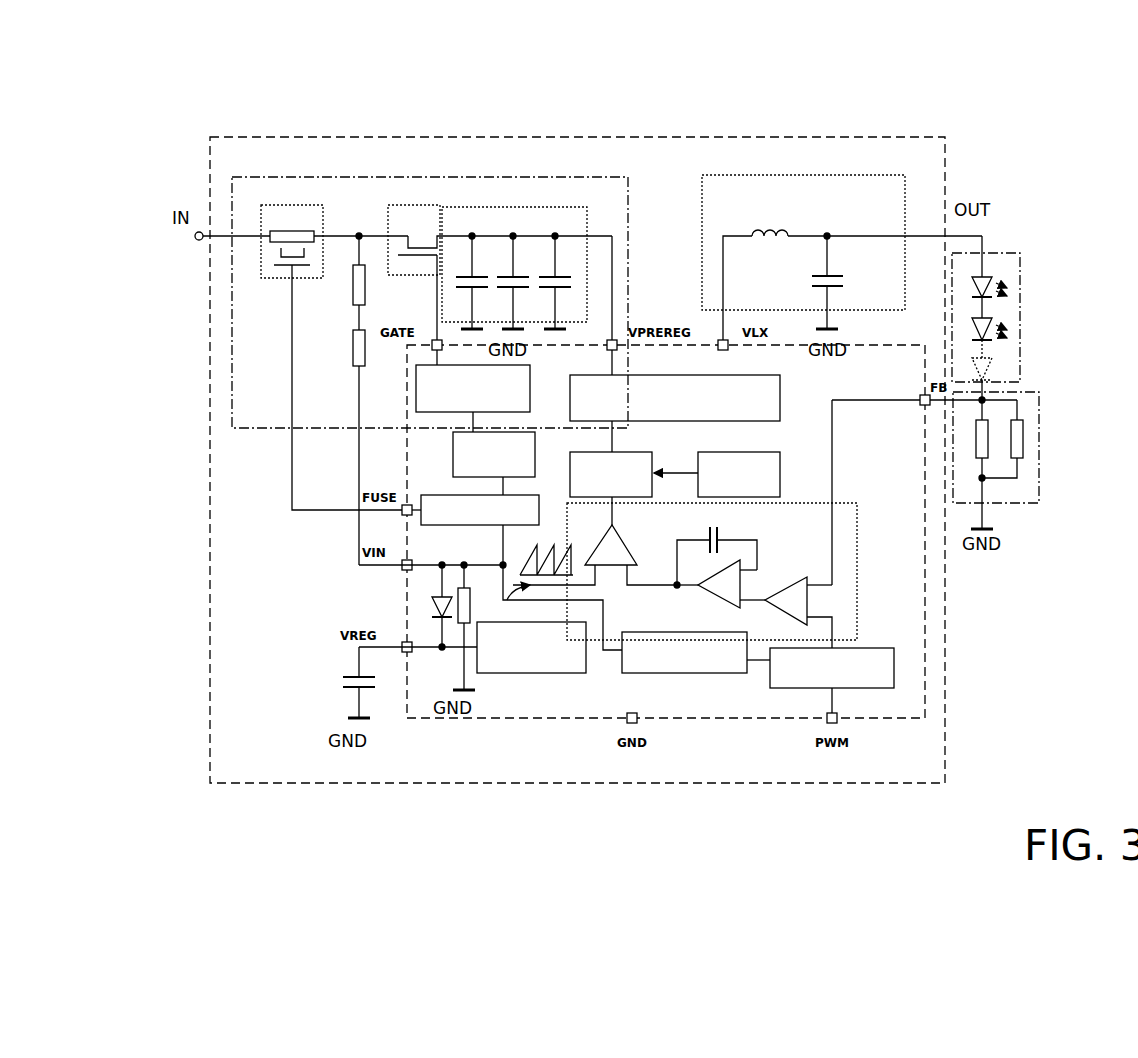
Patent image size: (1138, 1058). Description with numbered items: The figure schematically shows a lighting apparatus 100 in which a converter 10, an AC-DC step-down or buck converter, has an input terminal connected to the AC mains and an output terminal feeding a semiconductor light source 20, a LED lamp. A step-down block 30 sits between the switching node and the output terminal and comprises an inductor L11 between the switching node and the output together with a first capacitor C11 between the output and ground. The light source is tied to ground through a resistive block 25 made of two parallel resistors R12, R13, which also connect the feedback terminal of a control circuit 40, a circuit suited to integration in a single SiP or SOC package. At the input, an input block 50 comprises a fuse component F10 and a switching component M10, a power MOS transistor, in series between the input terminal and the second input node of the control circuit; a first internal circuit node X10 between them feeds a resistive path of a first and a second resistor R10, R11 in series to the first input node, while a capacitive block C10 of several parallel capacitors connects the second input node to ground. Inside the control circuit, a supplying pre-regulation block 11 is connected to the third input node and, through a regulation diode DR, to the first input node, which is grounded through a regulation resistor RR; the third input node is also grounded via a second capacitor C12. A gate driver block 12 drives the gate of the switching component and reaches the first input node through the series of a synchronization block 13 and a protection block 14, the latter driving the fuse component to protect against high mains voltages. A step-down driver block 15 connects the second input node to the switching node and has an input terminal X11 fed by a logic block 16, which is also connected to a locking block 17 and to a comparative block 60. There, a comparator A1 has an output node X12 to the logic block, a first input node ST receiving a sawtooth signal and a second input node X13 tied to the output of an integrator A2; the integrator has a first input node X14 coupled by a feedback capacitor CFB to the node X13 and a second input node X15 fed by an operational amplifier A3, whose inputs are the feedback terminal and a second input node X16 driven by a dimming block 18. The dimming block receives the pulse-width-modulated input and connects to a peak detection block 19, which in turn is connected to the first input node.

The lighting apparatus 100 is at (617, 411).
The converter 10 is at (238, 707).
The semiconductor light source 20 is at (1008, 272).
The resistive block 25 is at (1020, 495).
The step-down block 30 is at (748, 195).
The control circuit 40 is at (912, 590).
The input block 50 is at (285, 408).
The comparative block 60 is at (838, 545).
The supplying pre-regulation block 11 is at (530, 668).
The gate driver block 12 is at (520, 378).
The synchronization block 13 is at (455, 435).
The protection block 14 is at (470, 525).
The step-down driver block 15 is at (760, 408).
The logic block 16 is at (590, 465).
The locking block 17 is at (770, 475).
The dimming block 18 is at (866, 678).
The peak detection block 19 is at (655, 668).
The first internal circuit node X10 is at (359, 230).
The input terminal of the step-down driver block X11 is at (615, 420).
The output node of the comparator X12 is at (610, 497).
The second input node of the comparator X13 is at (650, 590).
The first input node of the integrator X14 is at (808, 521).
The second input node of the integrator X15 is at (740, 603).
The second input node of the operational amplifier X16 is at (840, 613).
The comparator A1 is at (595, 555).
The integrator A2 is at (719, 588).
The operational amplifier A3 is at (798, 603).
The capacitive block C10 is at (537, 207).
The first capacitor C11 is at (845, 281).
The second capacitor C12 is at (338, 682).
The feedback capacitor CFB is at (717, 551).
The regulation diode DR is at (419, 606).
The regulation resistor RR is at (476, 627).
The first input node of the comparator ST is at (526, 581).
The fuse component F10 is at (292, 241).
The switching component M10 is at (430, 272).
The first resistor R10 is at (341, 283).
The second resistor R11 is at (341, 447).
The resistor R12 is at (960, 464).
The resistor R13 is at (1026, 439).
The inductor L11 is at (775, 271).